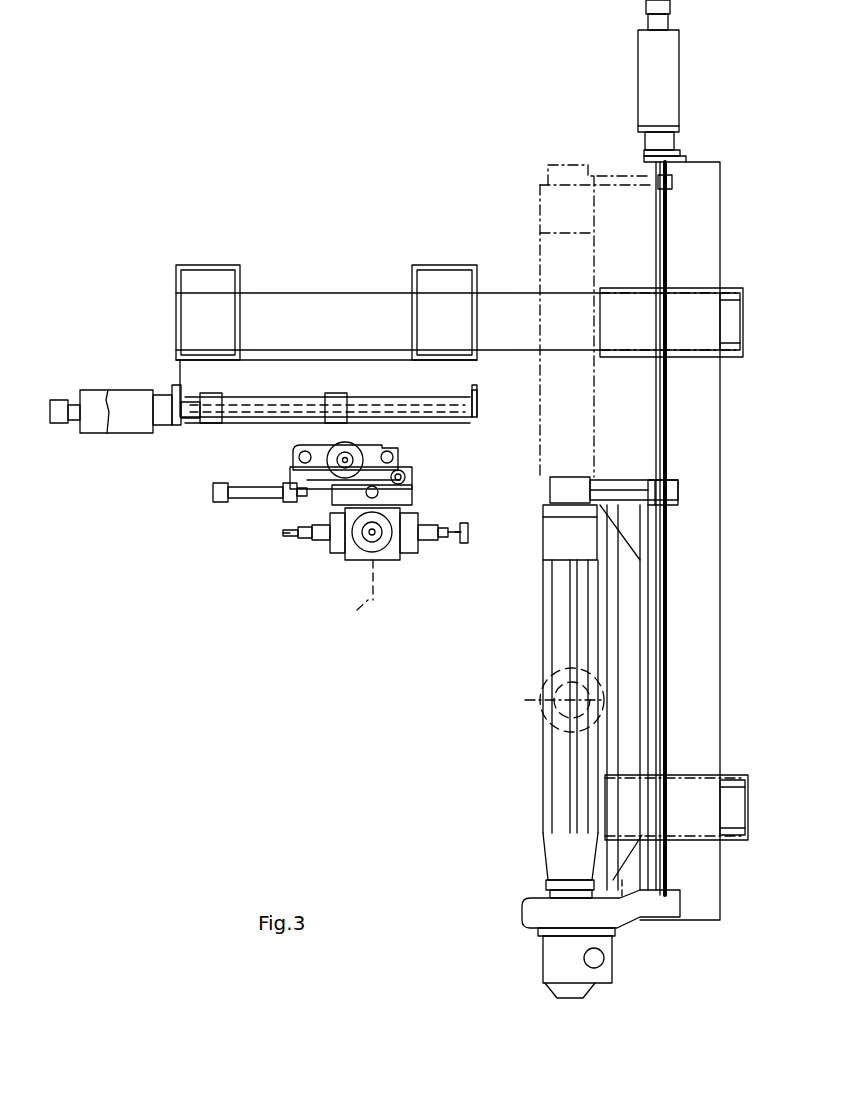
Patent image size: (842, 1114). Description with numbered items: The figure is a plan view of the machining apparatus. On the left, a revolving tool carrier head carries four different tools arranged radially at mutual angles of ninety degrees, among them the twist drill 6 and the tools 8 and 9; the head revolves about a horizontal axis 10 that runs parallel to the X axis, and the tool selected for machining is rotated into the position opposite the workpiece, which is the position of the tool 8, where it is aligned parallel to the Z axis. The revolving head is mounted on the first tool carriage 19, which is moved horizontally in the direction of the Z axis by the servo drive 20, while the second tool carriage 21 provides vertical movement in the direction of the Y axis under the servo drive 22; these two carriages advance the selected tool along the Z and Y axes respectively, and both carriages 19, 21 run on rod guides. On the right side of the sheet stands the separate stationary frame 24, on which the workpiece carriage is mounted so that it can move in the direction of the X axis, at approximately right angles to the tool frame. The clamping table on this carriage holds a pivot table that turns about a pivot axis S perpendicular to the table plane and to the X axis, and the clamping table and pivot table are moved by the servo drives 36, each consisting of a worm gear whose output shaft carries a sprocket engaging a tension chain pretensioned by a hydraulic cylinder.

The tool 6 is at (293, 535).
The tool 8 is at (452, 528).
The tool 9 is at (372, 532).
The horizontal axis 10 is at (350, 596).
The first tool carriage 19 is at (280, 432).
The servo drive 20 is at (97, 403).
The second tool carriage 21 is at (298, 472).
The servo drive 22 is at (345, 443).
The frame 24 is at (705, 437).
The servo drives 36 is at (541, 693).
The pivot axis S is at (570, 700).